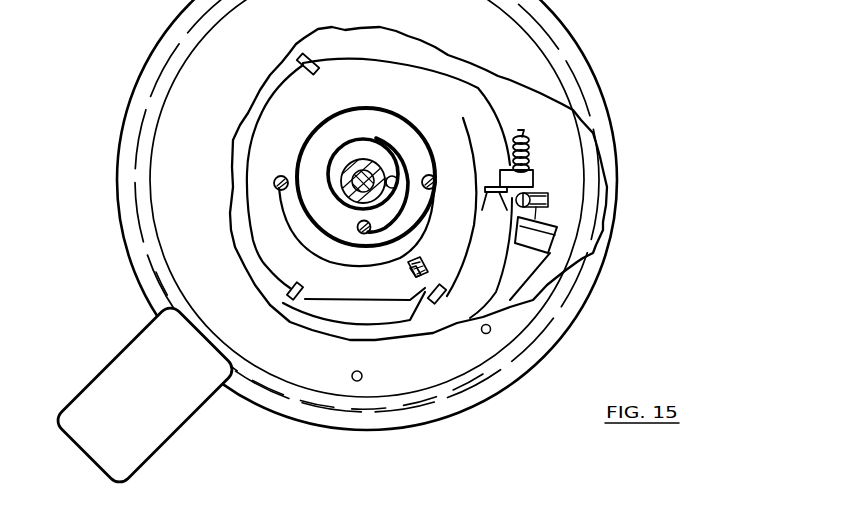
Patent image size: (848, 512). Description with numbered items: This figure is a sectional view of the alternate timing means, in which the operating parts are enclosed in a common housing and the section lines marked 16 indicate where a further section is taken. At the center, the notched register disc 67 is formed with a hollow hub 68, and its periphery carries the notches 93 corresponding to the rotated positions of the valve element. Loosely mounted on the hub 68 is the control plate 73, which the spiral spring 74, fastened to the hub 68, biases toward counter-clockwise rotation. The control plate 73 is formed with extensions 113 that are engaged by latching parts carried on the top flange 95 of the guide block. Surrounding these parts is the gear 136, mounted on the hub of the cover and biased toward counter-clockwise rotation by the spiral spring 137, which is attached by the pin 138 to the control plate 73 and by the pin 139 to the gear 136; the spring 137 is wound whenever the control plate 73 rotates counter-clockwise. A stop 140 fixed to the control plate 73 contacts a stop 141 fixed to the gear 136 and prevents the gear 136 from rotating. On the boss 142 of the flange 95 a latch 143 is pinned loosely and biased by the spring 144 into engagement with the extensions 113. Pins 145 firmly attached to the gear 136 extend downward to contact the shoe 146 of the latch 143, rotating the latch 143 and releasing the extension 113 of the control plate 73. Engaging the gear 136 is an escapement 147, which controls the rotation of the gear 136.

The section line 16- 16 is at (696, 70).
The notched register disc 67 is at (458, 287).
The hollow hub 68 is at (350, 172).
The control plate 73 is at (372, 66).
The spiral spring 74 is at (391, 143).
The notches 93 is at (429, 300).
The top flange 95 is at (480, 78).
The extension 113 is at (311, 60).
The gear 136 is at (141, 202).
The spiral spring 137 is at (282, 206).
The pin 138 is at (434, 175).
The pin 139 is at (280, 175).
The stop 140 is at (424, 270).
The stop 141 is at (409, 269).
The boss 142 is at (552, 200).
The latch 143 is at (508, 211).
The spring 144 is at (511, 130).
The pins 145 is at (362, 377).
The shoe 146 is at (527, 240).
The escapement 147 is at (134, 424).